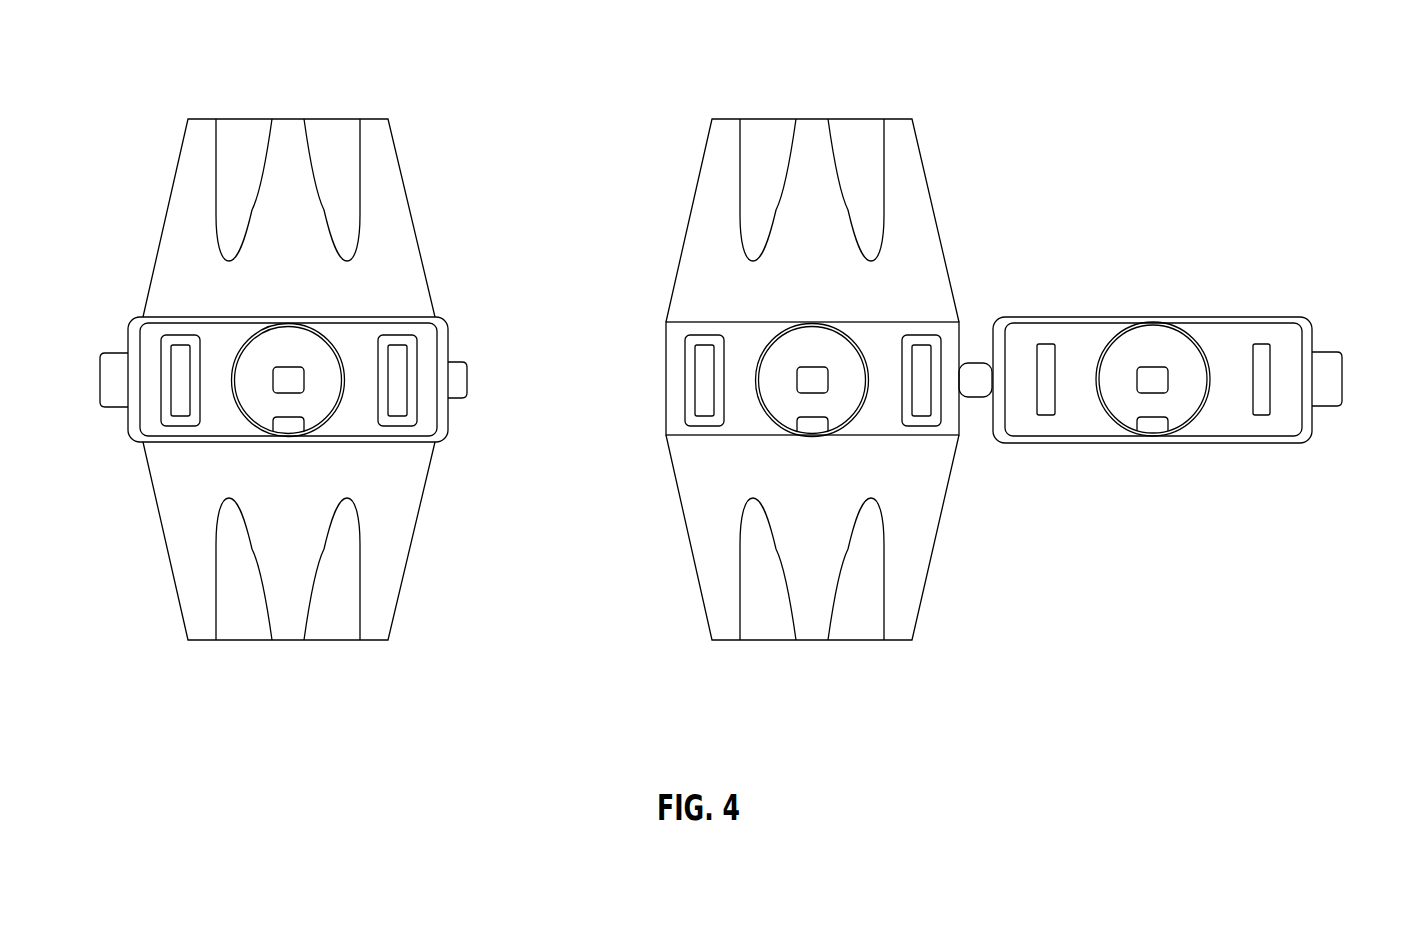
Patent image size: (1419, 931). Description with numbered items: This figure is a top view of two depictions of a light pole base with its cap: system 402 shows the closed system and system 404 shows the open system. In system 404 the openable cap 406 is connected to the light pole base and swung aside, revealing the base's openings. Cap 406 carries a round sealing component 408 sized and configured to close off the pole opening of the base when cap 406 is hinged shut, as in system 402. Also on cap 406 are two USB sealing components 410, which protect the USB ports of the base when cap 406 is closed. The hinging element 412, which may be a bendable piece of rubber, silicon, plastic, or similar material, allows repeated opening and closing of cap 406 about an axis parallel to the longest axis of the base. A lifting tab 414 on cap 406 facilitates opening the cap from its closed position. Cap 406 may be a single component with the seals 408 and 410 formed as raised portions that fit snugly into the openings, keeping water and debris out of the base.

The system 402 is at (251, 78).
The system 404 is at (781, 78).
The openable cap 406 is at (403, 318).
The round sealing component 408 is at (1108, 342).
The USB sealing components 410 is at (1265, 346).
The hinging element 412 is at (967, 362).
The lifting tab 414 is at (113, 407).